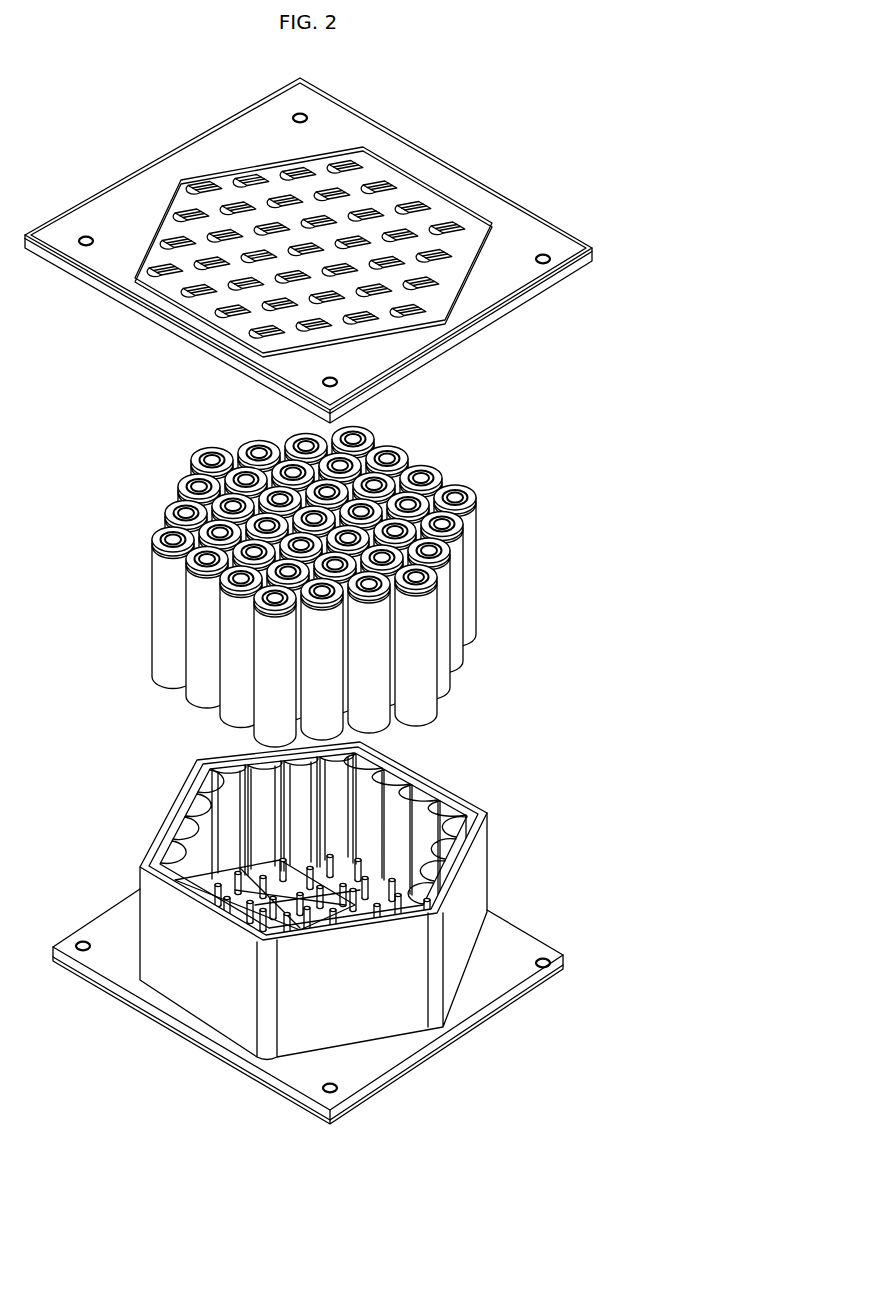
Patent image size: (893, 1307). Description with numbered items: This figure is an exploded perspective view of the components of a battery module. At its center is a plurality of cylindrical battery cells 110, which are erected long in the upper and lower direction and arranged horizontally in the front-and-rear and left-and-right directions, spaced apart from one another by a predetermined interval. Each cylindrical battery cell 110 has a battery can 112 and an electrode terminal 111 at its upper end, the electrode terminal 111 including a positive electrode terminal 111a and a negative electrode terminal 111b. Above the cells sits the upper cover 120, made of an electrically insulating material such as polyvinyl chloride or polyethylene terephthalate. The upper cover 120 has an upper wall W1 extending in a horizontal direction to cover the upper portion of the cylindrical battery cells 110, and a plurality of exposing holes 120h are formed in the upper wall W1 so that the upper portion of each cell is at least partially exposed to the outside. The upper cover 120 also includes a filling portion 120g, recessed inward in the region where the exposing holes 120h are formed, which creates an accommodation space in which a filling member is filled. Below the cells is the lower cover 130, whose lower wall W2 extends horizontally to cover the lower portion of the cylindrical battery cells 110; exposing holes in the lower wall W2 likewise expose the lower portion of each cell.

The cylindrical battery cell 110 is at (269, 581).
The electrode terminal 111 is at (128, 552).
The positive electrode terminal 111a is at (173, 539).
The negative electrode terminal 111b is at (153, 538).
The battery can 112 is at (153, 608).
The upper cover 120 is at (308, 248).
The filling portion 120g is at (313, 227).
The exposing hole 120h is at (282, 230).
The lower cover 130 is at (440, 779).
The upper wall W1 is at (263, 135).
The lower wall W2 is at (400, 1071).